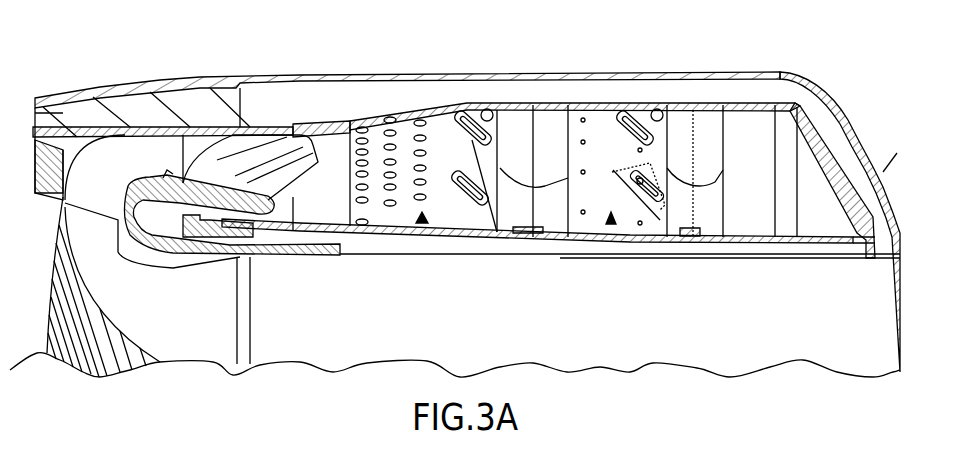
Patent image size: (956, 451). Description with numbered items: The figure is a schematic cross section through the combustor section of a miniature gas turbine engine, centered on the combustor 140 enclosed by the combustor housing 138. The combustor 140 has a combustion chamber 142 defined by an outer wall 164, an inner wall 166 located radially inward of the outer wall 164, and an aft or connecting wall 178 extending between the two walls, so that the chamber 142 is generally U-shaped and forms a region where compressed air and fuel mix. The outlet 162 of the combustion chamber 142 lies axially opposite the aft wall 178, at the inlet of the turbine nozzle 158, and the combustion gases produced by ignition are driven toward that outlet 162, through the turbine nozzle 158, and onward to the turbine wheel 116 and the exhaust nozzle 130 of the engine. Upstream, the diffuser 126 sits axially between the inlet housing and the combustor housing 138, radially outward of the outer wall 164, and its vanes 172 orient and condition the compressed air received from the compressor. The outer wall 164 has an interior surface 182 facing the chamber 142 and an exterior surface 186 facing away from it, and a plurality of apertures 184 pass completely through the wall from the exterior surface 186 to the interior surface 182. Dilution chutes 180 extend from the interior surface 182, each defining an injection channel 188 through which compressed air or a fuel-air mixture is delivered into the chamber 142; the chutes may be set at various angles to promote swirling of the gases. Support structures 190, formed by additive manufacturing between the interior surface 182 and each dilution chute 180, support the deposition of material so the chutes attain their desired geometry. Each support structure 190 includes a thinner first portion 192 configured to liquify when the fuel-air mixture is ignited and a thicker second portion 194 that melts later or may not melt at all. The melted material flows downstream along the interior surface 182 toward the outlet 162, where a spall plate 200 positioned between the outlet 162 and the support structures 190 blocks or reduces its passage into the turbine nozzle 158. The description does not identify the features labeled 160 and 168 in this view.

The turbine wheel 116 is at (83, 353).
The diffuser 126 is at (37, 98).
The exhaust nozzle 130 is at (448, 337).
The combustor housing 138 is at (390, 73).
The combustor 140 is at (793, 90).
The combustion chamber 142 is at (611, 224).
The turbine nozzle 158 is at (247, 200).
The support body 160 is at (455, 256).
The outlet of combustion chamber 162 is at (300, 203).
The outer wall 164 is at (703, 103).
The inner wall 166 is at (763, 243).
The sloped bracket 168 is at (250, 167).
The vanes 172 is at (135, 107).
The aft wall 178 is at (832, 150).
The dilution chutes 180 is at (555, 118).
The interior surface 182 is at (735, 112).
The apertures 184 is at (422, 223).
The exterior surface 186 is at (735, 103).
The injection channel 188 is at (538, 240).
The support structures 190 is at (640, 115).
The first portion 192 is at (461, 141).
The second portion 194 is at (478, 210).
The spall plate 200 is at (336, 126).